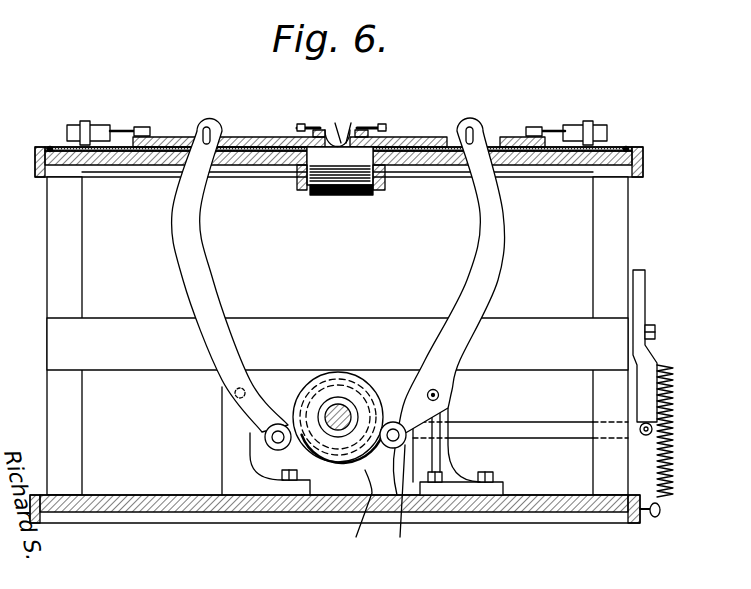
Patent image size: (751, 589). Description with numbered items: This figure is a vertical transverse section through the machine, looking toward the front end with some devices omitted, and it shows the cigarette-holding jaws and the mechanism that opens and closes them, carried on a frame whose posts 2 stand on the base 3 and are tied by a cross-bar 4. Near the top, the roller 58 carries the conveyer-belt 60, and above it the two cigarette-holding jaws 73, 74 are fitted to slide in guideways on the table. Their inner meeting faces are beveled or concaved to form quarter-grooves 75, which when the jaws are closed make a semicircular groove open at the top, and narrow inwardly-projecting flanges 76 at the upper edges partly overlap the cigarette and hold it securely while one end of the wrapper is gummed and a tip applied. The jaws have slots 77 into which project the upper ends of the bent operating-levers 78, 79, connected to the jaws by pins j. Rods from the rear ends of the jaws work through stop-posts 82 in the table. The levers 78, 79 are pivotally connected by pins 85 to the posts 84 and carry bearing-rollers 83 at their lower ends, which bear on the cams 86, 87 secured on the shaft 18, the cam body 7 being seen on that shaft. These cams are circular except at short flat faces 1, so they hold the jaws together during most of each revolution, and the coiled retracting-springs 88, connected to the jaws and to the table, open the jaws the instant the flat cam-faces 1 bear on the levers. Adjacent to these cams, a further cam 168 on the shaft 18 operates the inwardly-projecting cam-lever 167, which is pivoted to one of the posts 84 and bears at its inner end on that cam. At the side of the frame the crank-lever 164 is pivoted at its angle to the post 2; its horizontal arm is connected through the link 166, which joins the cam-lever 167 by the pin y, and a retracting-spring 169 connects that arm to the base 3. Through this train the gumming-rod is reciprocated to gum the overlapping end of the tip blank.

The flat cam-faces 1 is at (644, 167).
The post 2 is at (614, 249).
The base 3 is at (158, 498).
The cross bar 4 is at (122, 322).
The cam 7 is at (343, 382).
The shaft 18 is at (317, 413).
The pulley or roller 58 is at (304, 183).
The conveyer-belt 60 is at (340, 189).
The cigarette-holding jaw 73 is at (412, 142).
The cigarette-holding jaw 74 is at (254, 140).
The quarter-grooves 75 is at (342, 121).
The inwardly-projecting flanges 76 is at (324, 128).
The slots 77 is at (193, 142).
The operating-lever 78 is at (474, 267).
The operating-lever 79 is at (206, 266).
The stop-posts 82 is at (84, 122).
The bearing-rollers 83 is at (268, 448).
The posts 84 is at (228, 430).
The pins 85 is at (233, 393).
The cam 86 is at (304, 392).
The cam 87 is at (301, 464).
The coiled retracting-springs 88 is at (62, 146).
The crank-lever 164 is at (644, 290).
The link 166 is at (652, 378).
The cam-lever 167 is at (530, 424).
The cam 168 is at (392, 417).
The retracting-spring 169 is at (673, 405).
The pins j is at (208, 118).
The pin y is at (668, 437).